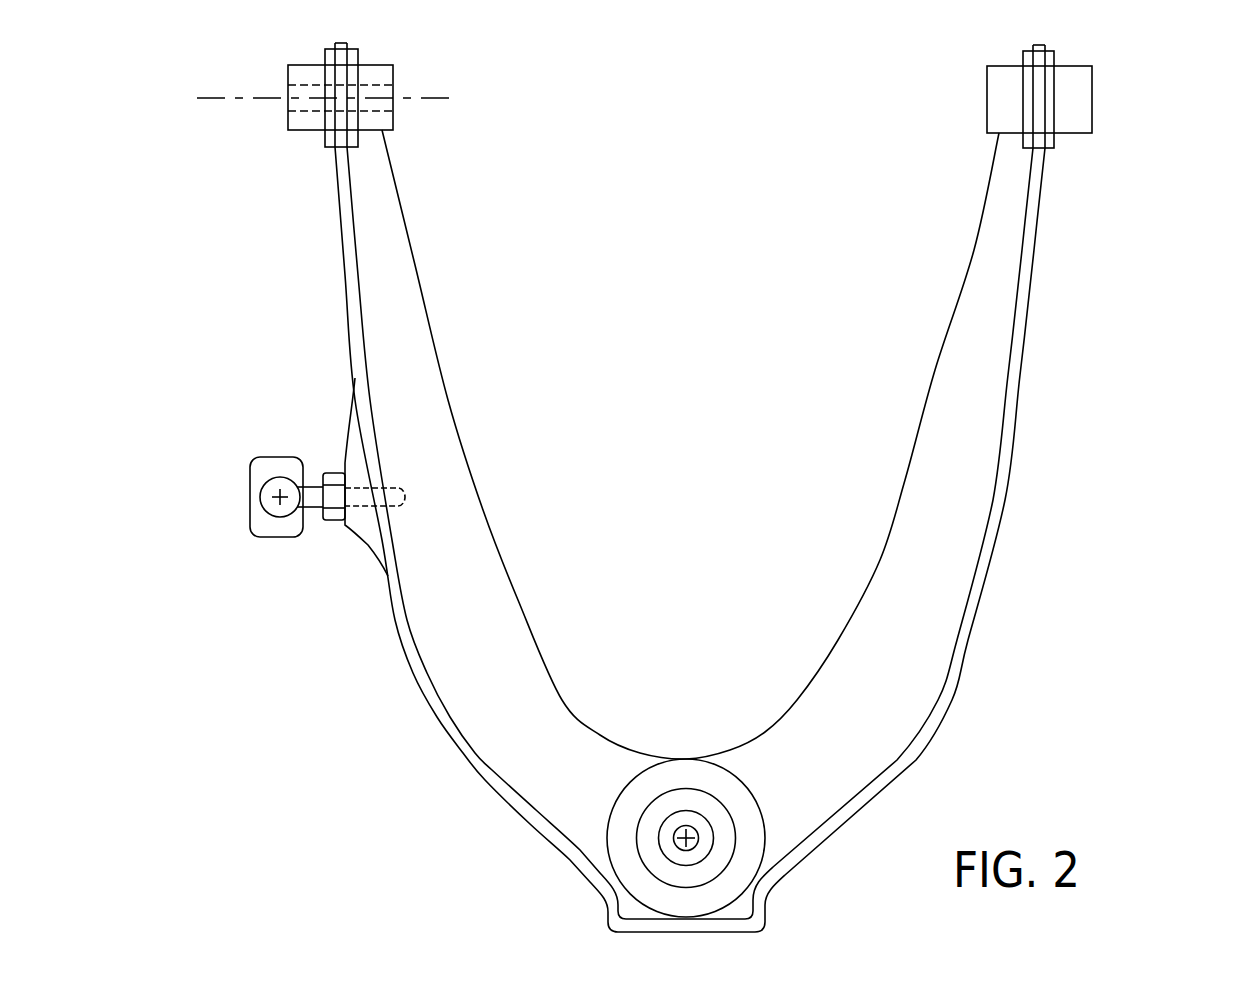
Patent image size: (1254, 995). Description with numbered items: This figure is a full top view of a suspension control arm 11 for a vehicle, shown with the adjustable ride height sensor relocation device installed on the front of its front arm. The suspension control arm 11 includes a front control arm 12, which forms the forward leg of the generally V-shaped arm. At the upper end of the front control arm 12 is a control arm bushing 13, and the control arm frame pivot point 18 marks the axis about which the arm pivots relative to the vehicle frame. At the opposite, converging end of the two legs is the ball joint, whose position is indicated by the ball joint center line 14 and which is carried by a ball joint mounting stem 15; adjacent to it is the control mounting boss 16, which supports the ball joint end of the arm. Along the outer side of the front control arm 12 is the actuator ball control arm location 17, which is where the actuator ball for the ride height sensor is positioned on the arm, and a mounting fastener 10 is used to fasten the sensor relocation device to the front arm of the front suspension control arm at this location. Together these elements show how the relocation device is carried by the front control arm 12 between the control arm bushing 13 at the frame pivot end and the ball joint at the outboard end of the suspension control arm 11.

The mounting fastener 10 is at (278, 496).
The suspension control arm 11 is at (1062, 419).
The front control arm 12 is at (457, 523).
The control arm bushing 13 is at (382, 77).
The ball joint center line 14 is at (687, 842).
The ball joint mounting stem 15 is at (660, 848).
The control mounting boss 16 is at (659, 895).
The actuator ball control arm location 17 is at (272, 528).
The control arm frame pivot point 18 is at (403, 98).